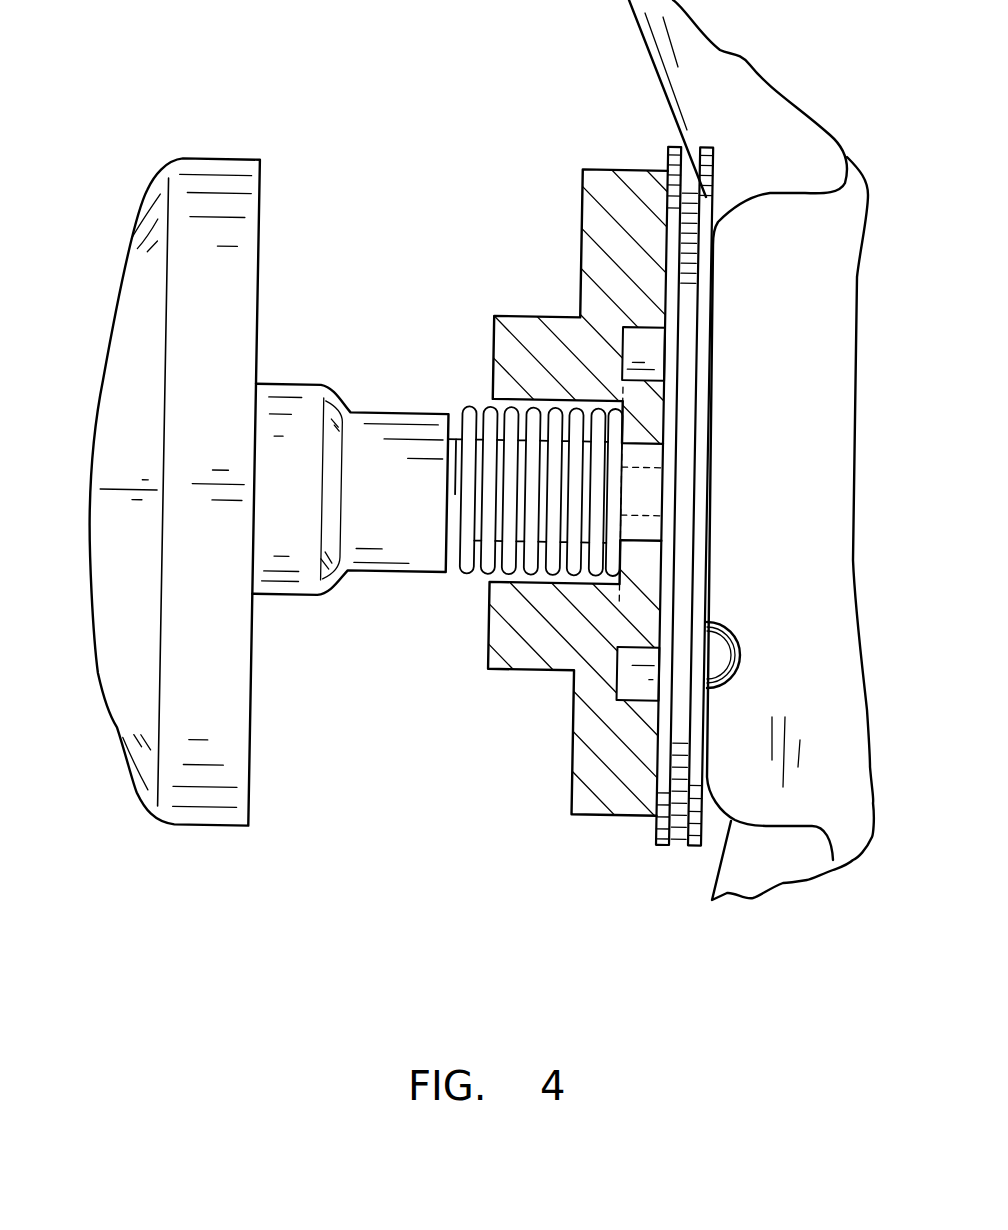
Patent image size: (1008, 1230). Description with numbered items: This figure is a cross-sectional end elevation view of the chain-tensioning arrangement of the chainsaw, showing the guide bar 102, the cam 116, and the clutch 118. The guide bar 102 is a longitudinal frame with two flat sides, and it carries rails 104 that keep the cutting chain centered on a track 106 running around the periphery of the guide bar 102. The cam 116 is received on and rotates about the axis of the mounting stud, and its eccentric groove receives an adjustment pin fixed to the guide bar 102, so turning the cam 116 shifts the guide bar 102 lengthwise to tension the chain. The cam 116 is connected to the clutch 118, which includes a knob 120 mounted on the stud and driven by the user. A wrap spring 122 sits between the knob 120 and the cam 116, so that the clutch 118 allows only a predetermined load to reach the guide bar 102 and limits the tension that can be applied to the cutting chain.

The guide bar 102 is at (671, 163).
The rails 104 is at (667, 262).
The track 106 is at (679, 833).
The cam 116 is at (492, 333).
The clutch 118 is at (137, 237).
The knob 120 is at (87, 516).
The wrap spring 122 is at (460, 410).